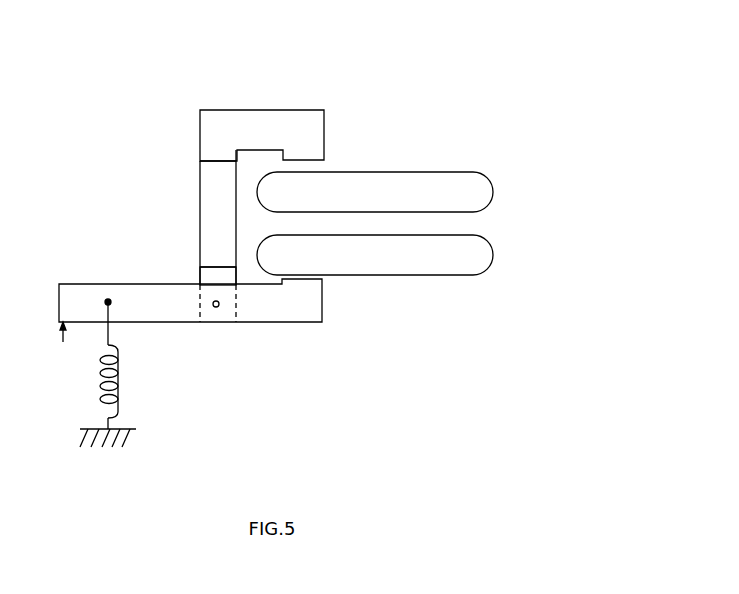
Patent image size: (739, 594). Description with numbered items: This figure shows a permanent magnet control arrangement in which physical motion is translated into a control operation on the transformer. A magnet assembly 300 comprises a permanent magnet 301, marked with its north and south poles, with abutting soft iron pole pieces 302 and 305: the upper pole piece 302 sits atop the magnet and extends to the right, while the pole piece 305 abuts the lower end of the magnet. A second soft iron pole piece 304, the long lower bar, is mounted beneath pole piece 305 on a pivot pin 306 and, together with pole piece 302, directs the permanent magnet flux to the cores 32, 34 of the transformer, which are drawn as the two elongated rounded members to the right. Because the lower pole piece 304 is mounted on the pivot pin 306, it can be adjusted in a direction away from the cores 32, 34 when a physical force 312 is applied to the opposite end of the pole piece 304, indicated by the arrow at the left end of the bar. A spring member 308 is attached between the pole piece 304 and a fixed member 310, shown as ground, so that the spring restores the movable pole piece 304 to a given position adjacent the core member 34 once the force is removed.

The magnet assembly 300 is at (210, 216).
The soft iron pole piece 302 is at (324, 114).
The permanent magnet 301 is at (209, 182).
The soft iron pole piece 305 is at (206, 280).
The second soft iron pole piece 304 is at (323, 308).
The pivot pin 306 is at (219, 313).
The core 32 is at (487, 176).
The core 34 is at (490, 248).
The physical force 312 is at (54, 339).
The spring member 308 is at (123, 358).
The fixed member 310 is at (119, 432).